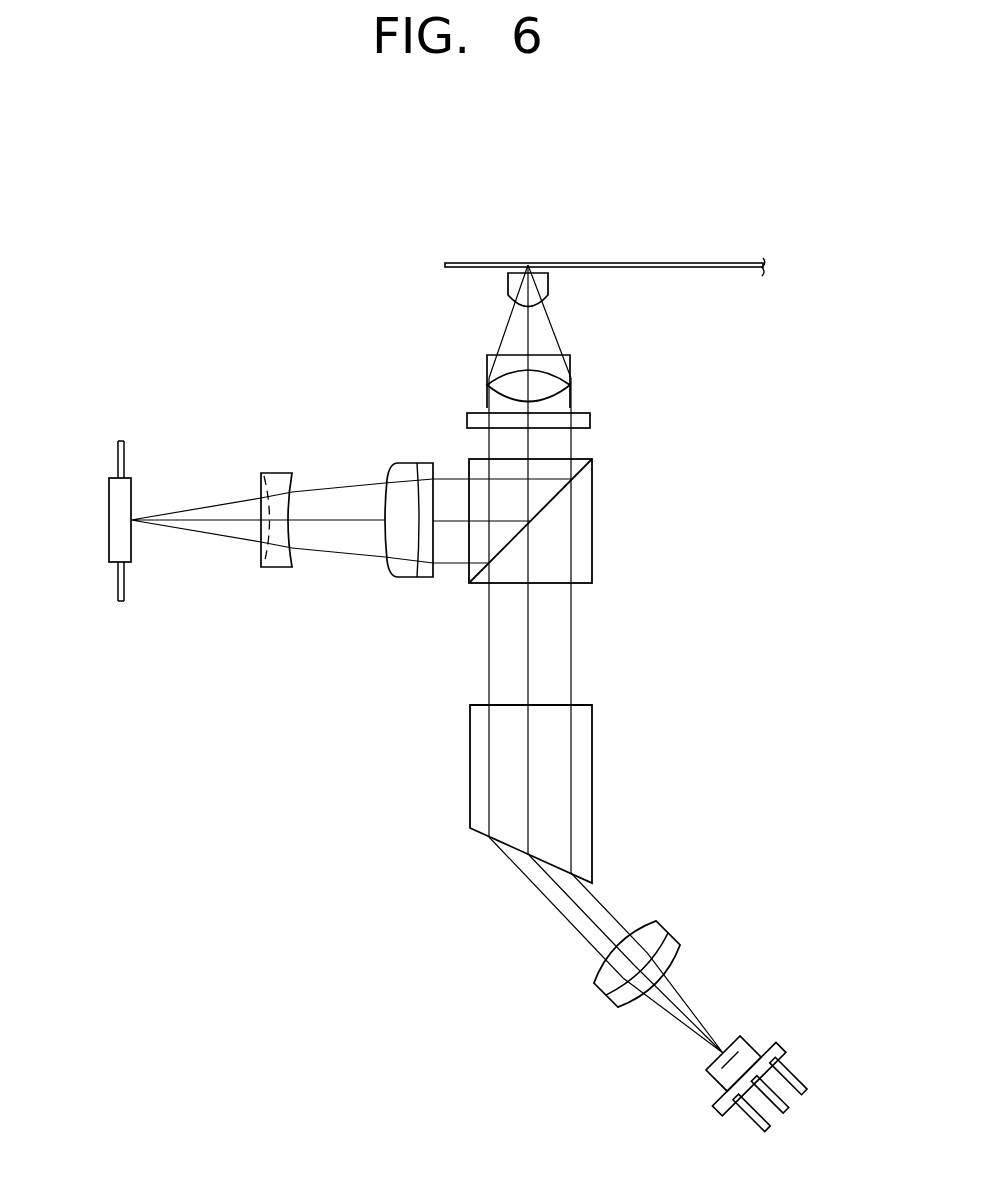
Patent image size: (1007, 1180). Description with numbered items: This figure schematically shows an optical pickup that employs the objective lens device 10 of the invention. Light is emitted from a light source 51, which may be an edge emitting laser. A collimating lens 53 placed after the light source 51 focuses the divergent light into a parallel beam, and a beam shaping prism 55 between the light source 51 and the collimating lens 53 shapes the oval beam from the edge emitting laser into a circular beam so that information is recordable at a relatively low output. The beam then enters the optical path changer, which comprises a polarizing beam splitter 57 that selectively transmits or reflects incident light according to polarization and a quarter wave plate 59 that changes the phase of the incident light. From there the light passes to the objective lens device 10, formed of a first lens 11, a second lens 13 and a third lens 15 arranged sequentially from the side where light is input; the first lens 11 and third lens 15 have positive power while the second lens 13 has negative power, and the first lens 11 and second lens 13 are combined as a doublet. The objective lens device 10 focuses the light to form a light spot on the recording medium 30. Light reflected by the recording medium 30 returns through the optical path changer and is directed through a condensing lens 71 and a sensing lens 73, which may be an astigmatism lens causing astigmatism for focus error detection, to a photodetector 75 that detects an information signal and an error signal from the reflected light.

The objective lens device 10 is at (655, 333).
The first lens 11 is at (562, 390).
The second lens 13 is at (560, 364).
The third lens 15 is at (548, 288).
The recording medium 30 is at (691, 262).
The light source 51 is at (785, 1053).
The collimating lens 53 is at (676, 940).
The beam shaping prism 55 is at (592, 789).
The polarizing beam splitter 57 is at (592, 531).
The ¼ wave plate 59 is at (590, 422).
The condensing lens 71 is at (417, 463).
The sensing lens 73 is at (278, 473).
The photodetector 75 is at (109, 509).